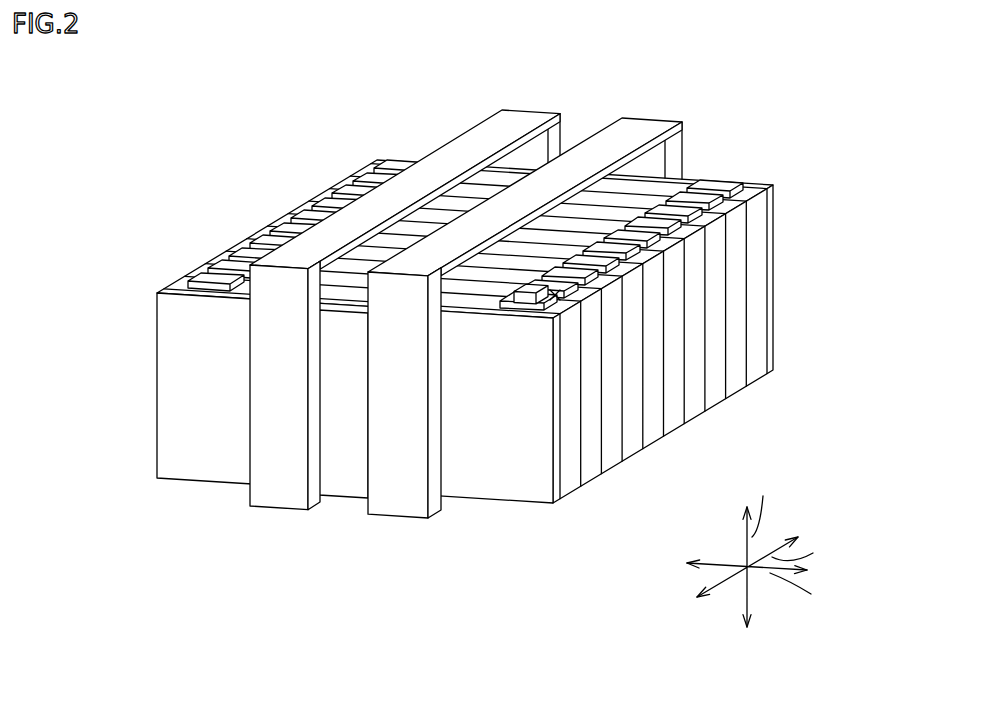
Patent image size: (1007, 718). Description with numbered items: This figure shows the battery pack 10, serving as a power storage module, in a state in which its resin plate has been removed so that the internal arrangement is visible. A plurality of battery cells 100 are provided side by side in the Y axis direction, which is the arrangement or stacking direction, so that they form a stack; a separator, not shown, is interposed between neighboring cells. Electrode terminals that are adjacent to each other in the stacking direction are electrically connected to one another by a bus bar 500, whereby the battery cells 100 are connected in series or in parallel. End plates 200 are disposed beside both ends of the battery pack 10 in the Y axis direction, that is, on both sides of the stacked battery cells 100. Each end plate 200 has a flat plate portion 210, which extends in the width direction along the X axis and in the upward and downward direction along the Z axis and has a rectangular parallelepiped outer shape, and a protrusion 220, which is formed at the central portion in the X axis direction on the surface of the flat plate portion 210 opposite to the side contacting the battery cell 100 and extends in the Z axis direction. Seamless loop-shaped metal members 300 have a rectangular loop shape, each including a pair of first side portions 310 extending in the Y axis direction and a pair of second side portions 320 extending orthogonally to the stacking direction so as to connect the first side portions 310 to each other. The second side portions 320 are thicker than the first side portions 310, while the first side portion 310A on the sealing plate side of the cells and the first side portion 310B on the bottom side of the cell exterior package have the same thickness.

The battery pack 10 is at (724, 91).
The battery cell 100 is at (694, 406).
The end plate 200 is at (776, 337).
The flat plate portion 210 is at (517, 488).
The protrusion 220 is at (354, 479).
The seamless loop-shaped metal member 300 is at (520, 118).
The first side portion 310 is at (80, 350).
The first side portion on sealing plate side 310A is at (300, 250).
The first side portion on bottom portion side 310B is at (316, 522).
The second side portion 320 is at (565, 137).
The bus bar 500 is at (567, 304).